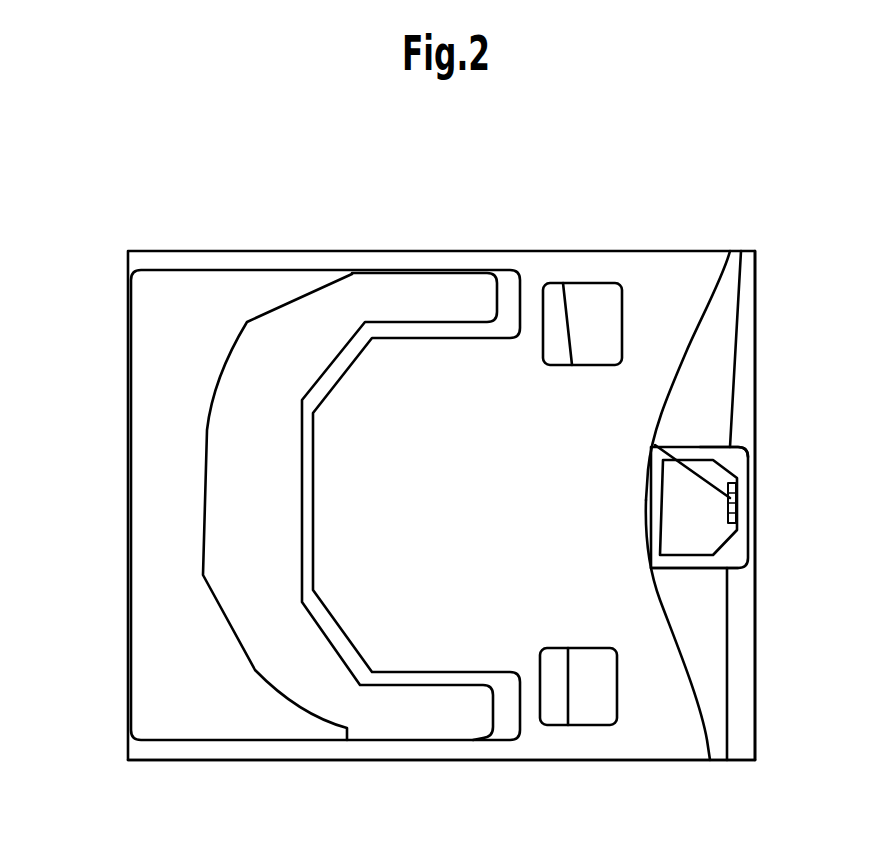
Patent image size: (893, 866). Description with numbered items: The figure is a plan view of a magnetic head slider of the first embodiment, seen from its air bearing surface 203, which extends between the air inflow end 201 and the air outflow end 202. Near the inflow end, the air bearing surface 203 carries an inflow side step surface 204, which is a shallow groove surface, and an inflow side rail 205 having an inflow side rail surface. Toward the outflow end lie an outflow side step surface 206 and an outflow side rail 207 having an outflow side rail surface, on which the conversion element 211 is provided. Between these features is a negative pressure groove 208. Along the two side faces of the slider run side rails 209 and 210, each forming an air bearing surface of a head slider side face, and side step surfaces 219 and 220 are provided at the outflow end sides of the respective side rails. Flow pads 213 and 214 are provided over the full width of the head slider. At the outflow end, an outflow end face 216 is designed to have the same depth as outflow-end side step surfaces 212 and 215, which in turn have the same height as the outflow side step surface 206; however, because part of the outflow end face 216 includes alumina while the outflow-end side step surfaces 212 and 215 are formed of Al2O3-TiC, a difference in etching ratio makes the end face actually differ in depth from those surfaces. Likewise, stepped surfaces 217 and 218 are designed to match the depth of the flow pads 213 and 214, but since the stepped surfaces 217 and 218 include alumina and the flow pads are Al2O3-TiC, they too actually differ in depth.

The air inflow end 201 is at (120, 340).
The air outflow end 202 is at (760, 383).
The air bearing surface 203 is at (253, 753).
The inflow side step surface 204 is at (192, 360).
The inflow side rail 205 is at (283, 347).
The outflow side step surface 206 is at (645, 495).
The outflow side rail 207 is at (678, 508).
The negative pressure groove 208 is at (378, 467).
The side rail 209 is at (607, 320).
The side rail 210 is at (590, 707).
The conversion element 211 is at (655, 445).
The outflow-end side step surface 212 is at (720, 457).
The flow pad 213 is at (720, 320).
The flow pad 214 is at (710, 650).
The outflow-end side step surface 215 is at (700, 565).
The outflow end face 216 is at (743, 502).
The stepped surface 217 is at (737, 722).
The stepped surface 218 is at (752, 290).
The side step surface 219 is at (555, 320).
The side step surface 220 is at (547, 693).